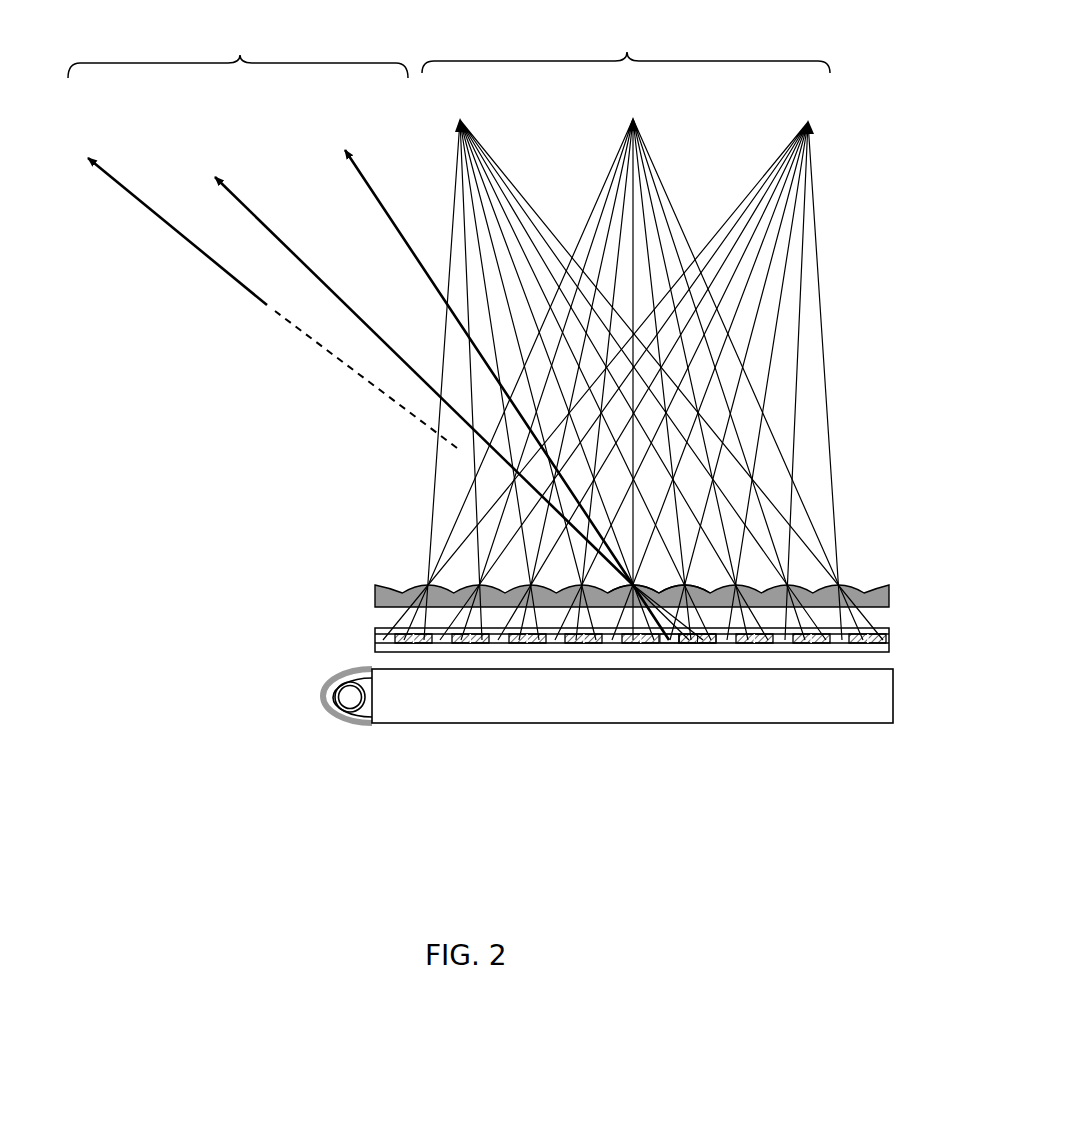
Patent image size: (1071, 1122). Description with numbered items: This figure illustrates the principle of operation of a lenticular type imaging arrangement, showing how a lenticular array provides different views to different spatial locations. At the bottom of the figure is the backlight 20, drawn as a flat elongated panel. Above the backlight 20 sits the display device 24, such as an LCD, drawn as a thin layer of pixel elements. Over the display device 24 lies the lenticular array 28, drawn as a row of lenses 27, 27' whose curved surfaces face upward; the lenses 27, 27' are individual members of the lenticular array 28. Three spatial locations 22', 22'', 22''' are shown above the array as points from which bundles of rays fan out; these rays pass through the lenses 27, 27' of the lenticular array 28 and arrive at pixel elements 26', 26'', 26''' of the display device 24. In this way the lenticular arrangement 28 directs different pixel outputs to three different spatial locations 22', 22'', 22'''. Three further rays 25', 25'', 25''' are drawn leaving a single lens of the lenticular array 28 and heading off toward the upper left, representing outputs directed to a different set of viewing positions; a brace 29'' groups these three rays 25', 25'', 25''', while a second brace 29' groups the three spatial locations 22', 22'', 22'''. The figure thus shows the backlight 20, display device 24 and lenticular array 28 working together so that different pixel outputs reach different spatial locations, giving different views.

The backlight 20 is at (907, 706).
The light source 22' is at (612, 358).
The light source 22'' is at (633, 358).
The light source 22''' is at (651, 358).
The display device 24 is at (905, 644).
The reflected light ray 25' is at (488, 370).
The reflected light ray 25'' is at (438, 370).
The reflected light ray 25''' is at (380, 370).
The detector element 26' is at (694, 708).
The detector element 26'' is at (742, 708).
The detector element 26''' is at (786, 708).
The lens 27 is at (793, 530).
The lens 27' is at (476, 530).
The lenticular array 28 is at (907, 604).
The group of light sources 29' is at (626, 39).
The group of reflected rays 29'' is at (238, 41).